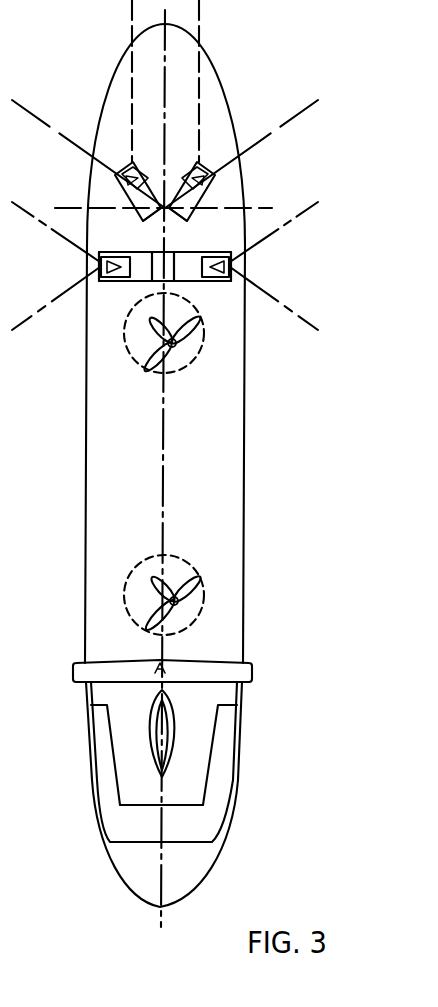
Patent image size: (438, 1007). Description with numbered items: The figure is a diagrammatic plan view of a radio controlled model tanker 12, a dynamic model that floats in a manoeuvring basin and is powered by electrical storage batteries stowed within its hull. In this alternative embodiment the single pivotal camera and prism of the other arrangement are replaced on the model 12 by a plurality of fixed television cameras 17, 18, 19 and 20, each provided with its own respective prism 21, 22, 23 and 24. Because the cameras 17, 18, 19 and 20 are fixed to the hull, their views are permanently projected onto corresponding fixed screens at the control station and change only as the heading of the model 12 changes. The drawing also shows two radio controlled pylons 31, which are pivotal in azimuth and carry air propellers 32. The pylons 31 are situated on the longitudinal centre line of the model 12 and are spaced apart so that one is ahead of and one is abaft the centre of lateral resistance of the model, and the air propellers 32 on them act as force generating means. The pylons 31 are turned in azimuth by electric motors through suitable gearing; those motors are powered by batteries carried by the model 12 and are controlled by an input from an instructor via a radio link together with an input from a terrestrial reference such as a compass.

The model tanker 12 is at (138, 545).
The television camera 17 is at (143, 270).
The television camera 18 is at (140, 203).
The television camera 19 is at (185, 203).
The television camera 20 is at (188, 270).
The prism 21 is at (100, 265).
The prism 22 is at (117, 177).
The prism 23 is at (213, 175).
The prism 24 is at (231, 267).
The pylon 31 is at (168, 340).
The air propeller 32 is at (197, 330).